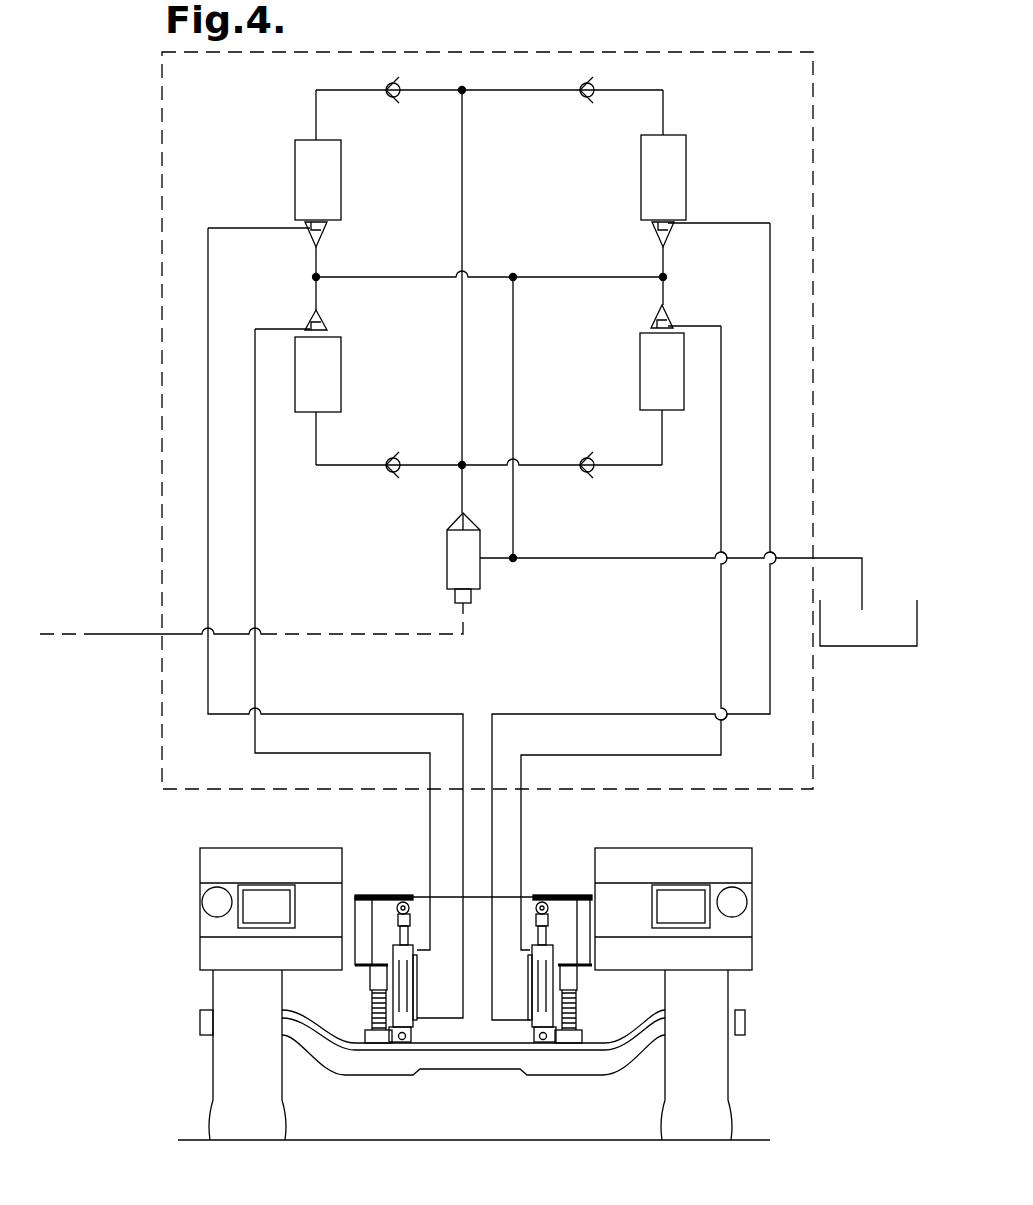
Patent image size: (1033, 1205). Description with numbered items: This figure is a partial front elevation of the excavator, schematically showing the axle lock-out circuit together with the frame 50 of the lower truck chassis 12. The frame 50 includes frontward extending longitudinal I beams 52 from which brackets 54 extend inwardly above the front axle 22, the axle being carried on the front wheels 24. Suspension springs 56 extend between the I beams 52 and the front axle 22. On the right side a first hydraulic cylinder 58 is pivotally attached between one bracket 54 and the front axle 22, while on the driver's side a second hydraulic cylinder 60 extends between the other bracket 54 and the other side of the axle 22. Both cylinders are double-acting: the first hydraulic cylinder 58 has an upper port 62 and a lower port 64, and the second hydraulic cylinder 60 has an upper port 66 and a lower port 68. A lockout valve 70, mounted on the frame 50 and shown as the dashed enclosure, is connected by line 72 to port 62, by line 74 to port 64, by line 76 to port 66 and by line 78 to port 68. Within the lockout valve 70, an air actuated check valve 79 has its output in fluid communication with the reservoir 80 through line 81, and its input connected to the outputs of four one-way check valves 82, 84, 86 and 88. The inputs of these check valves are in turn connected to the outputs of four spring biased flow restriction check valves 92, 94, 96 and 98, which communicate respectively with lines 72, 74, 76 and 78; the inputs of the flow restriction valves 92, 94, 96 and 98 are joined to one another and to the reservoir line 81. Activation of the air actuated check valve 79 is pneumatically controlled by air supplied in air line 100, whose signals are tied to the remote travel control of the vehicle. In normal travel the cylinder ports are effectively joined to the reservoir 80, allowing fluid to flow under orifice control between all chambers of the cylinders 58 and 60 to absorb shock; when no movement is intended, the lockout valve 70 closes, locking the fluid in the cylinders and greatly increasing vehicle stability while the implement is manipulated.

The lower truck chassis 12 is at (757, 953).
The front axle 22 is at (463, 1060).
The front wheels 24 is at (228, 1090).
The frame 50 is at (533, 872).
The I beams 52 is at (357, 896).
The brackets 54 is at (397, 918).
The suspension springs 56 is at (370, 1000).
The first hydraulic cylinder 58 is at (390, 1042).
The second hydraulic cylinder 60 is at (552, 1042).
The upper port 62 is at (417, 957).
The lower port 64 is at (417, 1000).
The upper port 66 is at (528, 957).
The lower port 68 is at (528, 1000).
The lockout valve 70 is at (660, 50).
The line 72 is at (340, 752).
The line 74 is at (218, 716).
The line 76 is at (597, 752).
The line 78 is at (757, 716).
The air actuated check valve 79 is at (447, 568).
The reservoir 80 is at (875, 648).
The line 81 is at (652, 558).
The one-way check valve 82 is at (390, 472).
The one-way check valve 84 is at (393, 98).
The one-way check valve 86 is at (590, 470).
The one-way check valve 88 is at (587, 97).
The spring biased flow restriction check valve 92 is at (341, 380).
The spring biased flow restriction check valve 94 is at (341, 196).
The spring biased flow restriction check valve 96 is at (640, 372).
The spring biased flow restriction check valve 98 is at (641, 190).
The air line 100 is at (108, 632).